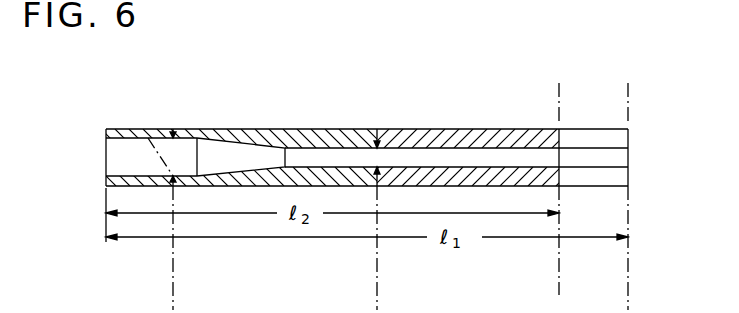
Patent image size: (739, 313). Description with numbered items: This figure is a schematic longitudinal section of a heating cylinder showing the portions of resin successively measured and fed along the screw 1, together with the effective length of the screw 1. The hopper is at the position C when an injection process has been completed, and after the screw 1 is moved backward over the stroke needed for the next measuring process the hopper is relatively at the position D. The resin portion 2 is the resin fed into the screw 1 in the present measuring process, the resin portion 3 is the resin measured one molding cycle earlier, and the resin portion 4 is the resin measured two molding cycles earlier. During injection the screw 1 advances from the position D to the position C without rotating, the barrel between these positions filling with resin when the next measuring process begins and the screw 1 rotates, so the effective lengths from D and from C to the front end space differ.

The screw 1 is at (183, 148).
The portion of the resin fed in the present measuring process 2 is at (456, 129).
The portion of the resin in the measuring process before one molding cycle 3 is at (291, 129).
The portion of the resin in the measuring process before two molding cycles 4 is at (148, 129).
The position D is at (560, 102).
The position C is at (628, 102).